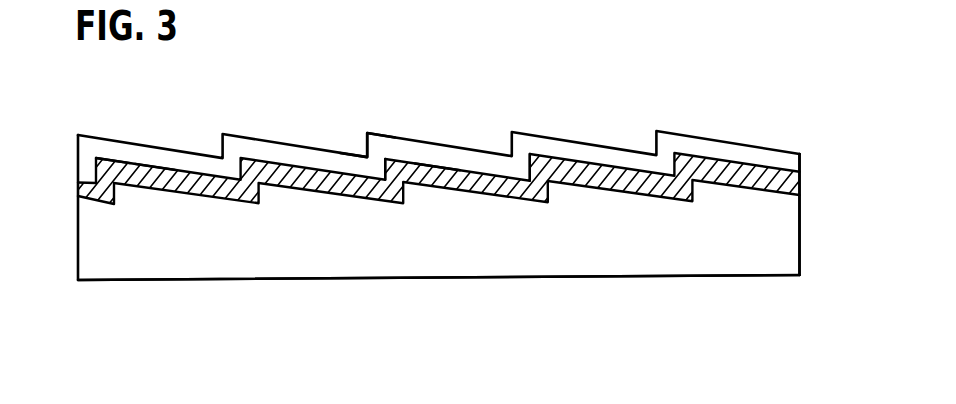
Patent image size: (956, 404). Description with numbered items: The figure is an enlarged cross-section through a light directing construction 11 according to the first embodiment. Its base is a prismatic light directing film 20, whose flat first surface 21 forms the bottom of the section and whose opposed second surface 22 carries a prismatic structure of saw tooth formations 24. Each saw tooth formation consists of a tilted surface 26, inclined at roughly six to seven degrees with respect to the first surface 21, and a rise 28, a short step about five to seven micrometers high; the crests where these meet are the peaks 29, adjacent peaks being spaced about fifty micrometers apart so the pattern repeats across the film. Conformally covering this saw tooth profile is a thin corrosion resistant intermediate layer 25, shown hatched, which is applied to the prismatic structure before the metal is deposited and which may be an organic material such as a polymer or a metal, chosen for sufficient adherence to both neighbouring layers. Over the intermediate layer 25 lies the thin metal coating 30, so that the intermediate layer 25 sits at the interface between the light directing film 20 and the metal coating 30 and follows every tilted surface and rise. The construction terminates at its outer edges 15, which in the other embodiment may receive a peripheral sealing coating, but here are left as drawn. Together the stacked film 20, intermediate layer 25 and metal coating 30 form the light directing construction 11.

The light directing construction 11 is at (703, 102).
The outer edges 15 is at (800, 213).
The prismatic light directing film 20 is at (78, 227).
The first surface 21 is at (307, 280).
The second surface 22 is at (113, 163).
The saw tooth formations 24 is at (152, 167).
The intermediate layer 25 is at (78, 184).
The tilted surfaces 26 is at (435, 163).
The rises 28 is at (382, 162).
The peaks 29 is at (387, 160).
The thin metal coating 30 is at (78, 139).